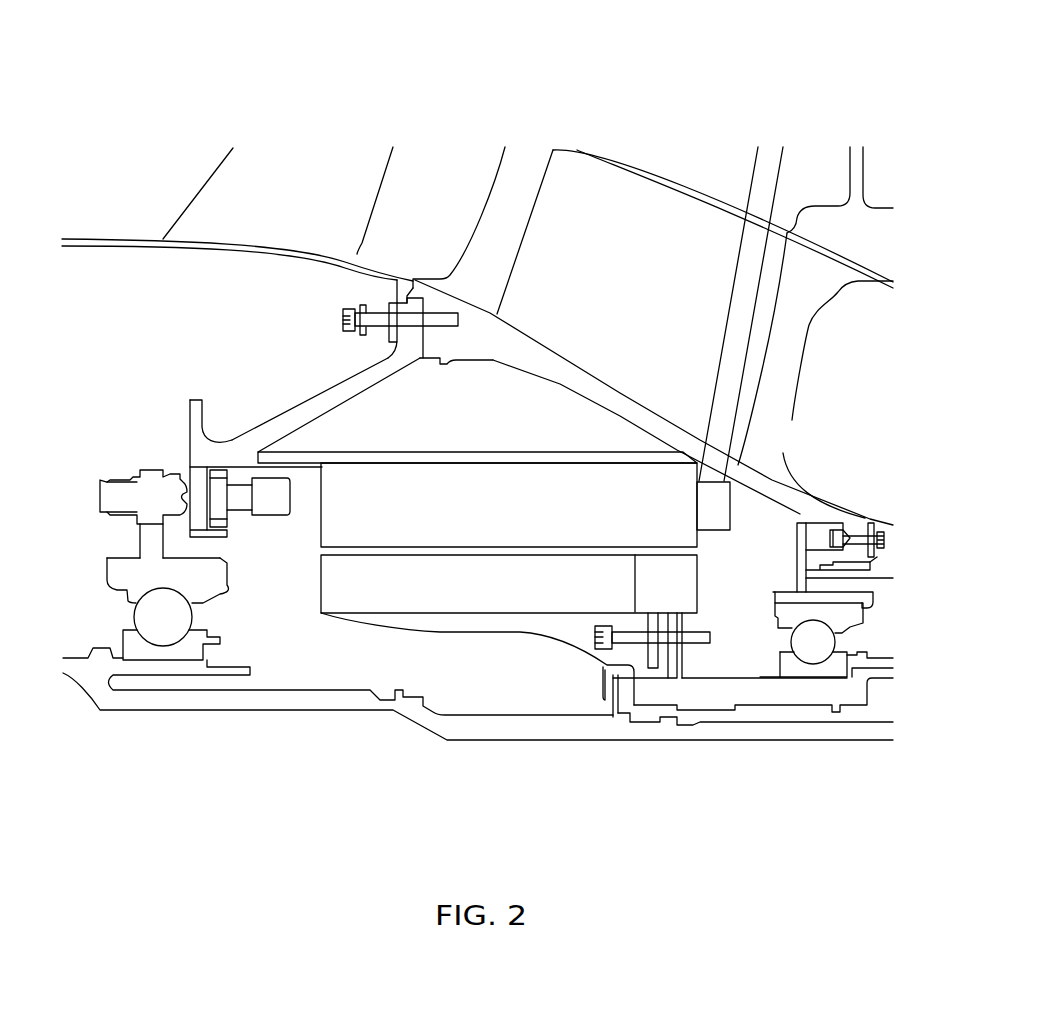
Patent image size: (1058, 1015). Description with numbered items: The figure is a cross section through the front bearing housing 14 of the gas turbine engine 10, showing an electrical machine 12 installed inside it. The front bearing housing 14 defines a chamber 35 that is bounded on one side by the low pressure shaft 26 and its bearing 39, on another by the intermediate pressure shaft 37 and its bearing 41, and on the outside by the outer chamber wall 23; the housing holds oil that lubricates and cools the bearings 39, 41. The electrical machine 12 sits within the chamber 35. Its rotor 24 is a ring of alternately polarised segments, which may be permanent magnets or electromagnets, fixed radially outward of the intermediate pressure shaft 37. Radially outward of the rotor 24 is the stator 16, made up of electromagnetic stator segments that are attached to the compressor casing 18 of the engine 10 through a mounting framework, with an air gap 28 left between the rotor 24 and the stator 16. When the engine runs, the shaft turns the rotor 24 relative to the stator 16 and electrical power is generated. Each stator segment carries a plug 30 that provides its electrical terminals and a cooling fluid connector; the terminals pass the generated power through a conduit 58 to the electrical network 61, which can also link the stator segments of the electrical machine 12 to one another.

The gas turbine engine 10 is at (641, 86).
The electrical machine 12 is at (302, 568).
The front bearing housing 14 is at (284, 364).
The stator 16 is at (390, 502).
The compressor casing 18 is at (493, 450).
The outer chamber wall 23 is at (348, 376).
The rotor 24 is at (480, 592).
The low pressure shaft 26 is at (555, 742).
The air gap 28 is at (634, 556).
The plug 30 is at (708, 532).
The chamber 35 is at (357, 662).
The intermediate pressure shaft 37 is at (693, 695).
The bearing 39 is at (163, 620).
The bearing 41 is at (813, 645).
The conduit 58 is at (726, 312).
The electrical network 61 is at (738, 510).